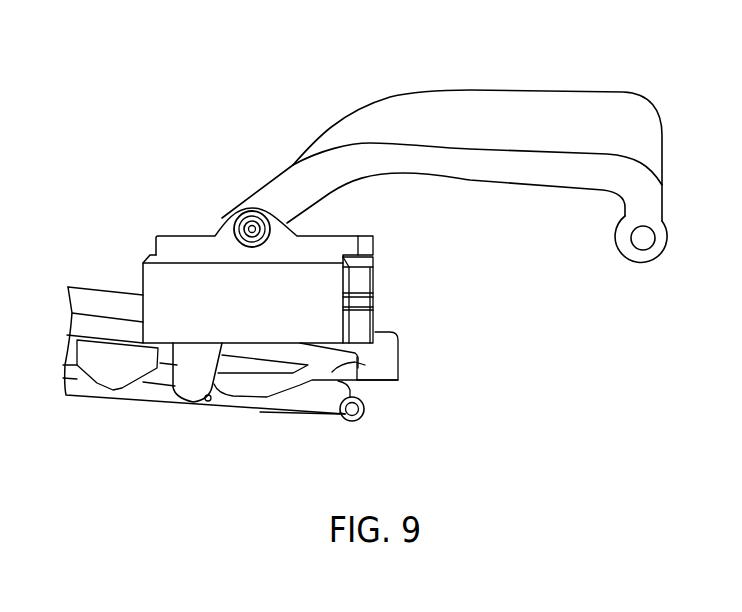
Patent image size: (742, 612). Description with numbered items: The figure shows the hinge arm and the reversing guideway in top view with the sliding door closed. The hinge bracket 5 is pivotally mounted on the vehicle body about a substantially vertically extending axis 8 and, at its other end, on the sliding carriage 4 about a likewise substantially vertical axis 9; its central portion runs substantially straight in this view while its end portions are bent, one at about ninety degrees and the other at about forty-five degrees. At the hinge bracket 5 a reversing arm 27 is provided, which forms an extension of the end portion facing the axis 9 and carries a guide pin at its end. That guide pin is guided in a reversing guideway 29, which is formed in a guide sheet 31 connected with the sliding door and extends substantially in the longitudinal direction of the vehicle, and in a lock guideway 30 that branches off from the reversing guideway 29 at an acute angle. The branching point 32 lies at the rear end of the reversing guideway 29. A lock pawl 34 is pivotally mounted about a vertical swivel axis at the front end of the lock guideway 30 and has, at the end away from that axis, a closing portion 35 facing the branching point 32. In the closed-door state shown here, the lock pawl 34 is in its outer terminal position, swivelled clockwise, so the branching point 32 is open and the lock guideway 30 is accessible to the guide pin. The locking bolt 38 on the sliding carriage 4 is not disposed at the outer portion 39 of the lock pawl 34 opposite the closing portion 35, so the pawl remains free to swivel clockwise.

The sliding carriage 4 is at (140, 219).
The hinge bracket 5 is at (484, 100).
The axis 8 is at (645, 237).
The axis 9 is at (251, 226).
The reversing arm 27 is at (193, 390).
The reversing guideway 29 is at (87, 322).
The lock guideway 30 is at (240, 385).
The guide sheet 31 is at (392, 348).
The branching point 32 is at (398, 379).
The lock pawl 34 is at (295, 405).
The closing portion 35 is at (350, 380).
The locking bolt 38 is at (362, 411).
The outer portion 39 is at (330, 417).